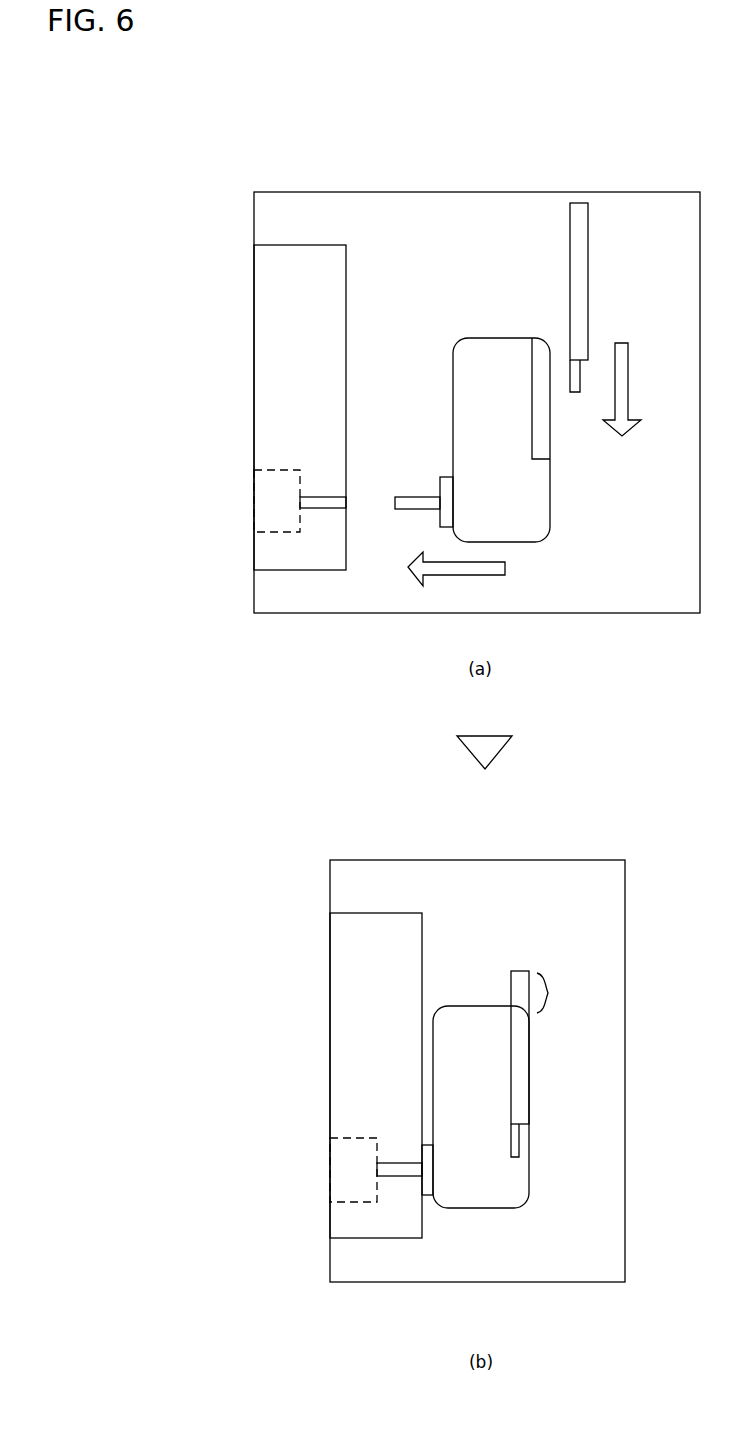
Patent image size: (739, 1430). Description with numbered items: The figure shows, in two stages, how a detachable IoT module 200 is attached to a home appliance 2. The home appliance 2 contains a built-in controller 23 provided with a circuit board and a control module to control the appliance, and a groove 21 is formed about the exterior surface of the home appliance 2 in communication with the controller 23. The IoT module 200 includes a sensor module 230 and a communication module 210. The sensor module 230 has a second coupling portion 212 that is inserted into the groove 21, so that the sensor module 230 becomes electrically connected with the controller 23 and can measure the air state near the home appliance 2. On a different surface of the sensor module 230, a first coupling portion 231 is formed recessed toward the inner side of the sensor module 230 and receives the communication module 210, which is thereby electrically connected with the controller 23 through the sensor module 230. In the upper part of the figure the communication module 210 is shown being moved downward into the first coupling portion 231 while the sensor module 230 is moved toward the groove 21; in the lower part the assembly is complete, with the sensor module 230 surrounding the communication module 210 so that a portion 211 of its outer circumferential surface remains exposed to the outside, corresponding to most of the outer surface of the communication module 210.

The home appliance 2 is at (303, 245).
The groove 21 is at (320, 503).
The controller 23 is at (272, 470).
The IoT module 200 is at (553, 950).
The communication module 210 is at (582, 258).
The exposed portion 211 is at (548, 993).
The second coupling portion 212 is at (408, 511).
The sensor module 230 is at (500, 338).
The first coupling portion 231 is at (538, 390).